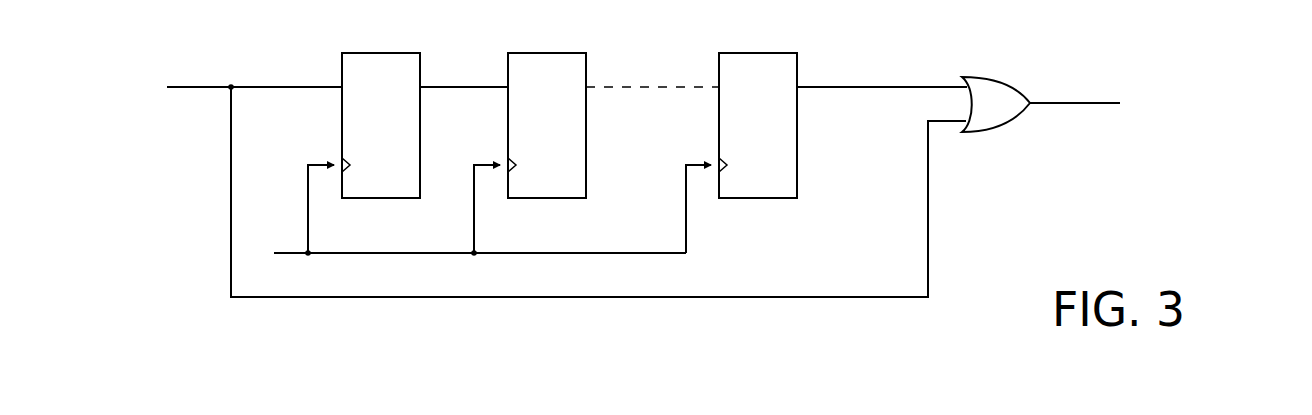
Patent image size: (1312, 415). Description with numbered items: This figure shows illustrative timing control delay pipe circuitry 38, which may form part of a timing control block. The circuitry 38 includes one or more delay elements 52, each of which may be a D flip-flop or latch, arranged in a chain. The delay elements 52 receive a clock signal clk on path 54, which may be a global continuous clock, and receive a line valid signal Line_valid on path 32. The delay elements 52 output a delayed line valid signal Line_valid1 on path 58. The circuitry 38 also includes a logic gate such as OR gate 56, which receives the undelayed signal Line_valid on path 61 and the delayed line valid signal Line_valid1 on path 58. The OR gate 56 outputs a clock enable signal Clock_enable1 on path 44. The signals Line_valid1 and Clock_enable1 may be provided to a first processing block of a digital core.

The timing control delay pipe circuitry 38 is at (1133, 34).
The path 32 is at (188, 90).
The delay element 52 is at (394, 136).
The path 54 is at (283, 254).
The path 58 is at (877, 89).
The OR gate 56 is at (995, 121).
The path 44 is at (1070, 102).
The path 61 is at (930, 163).